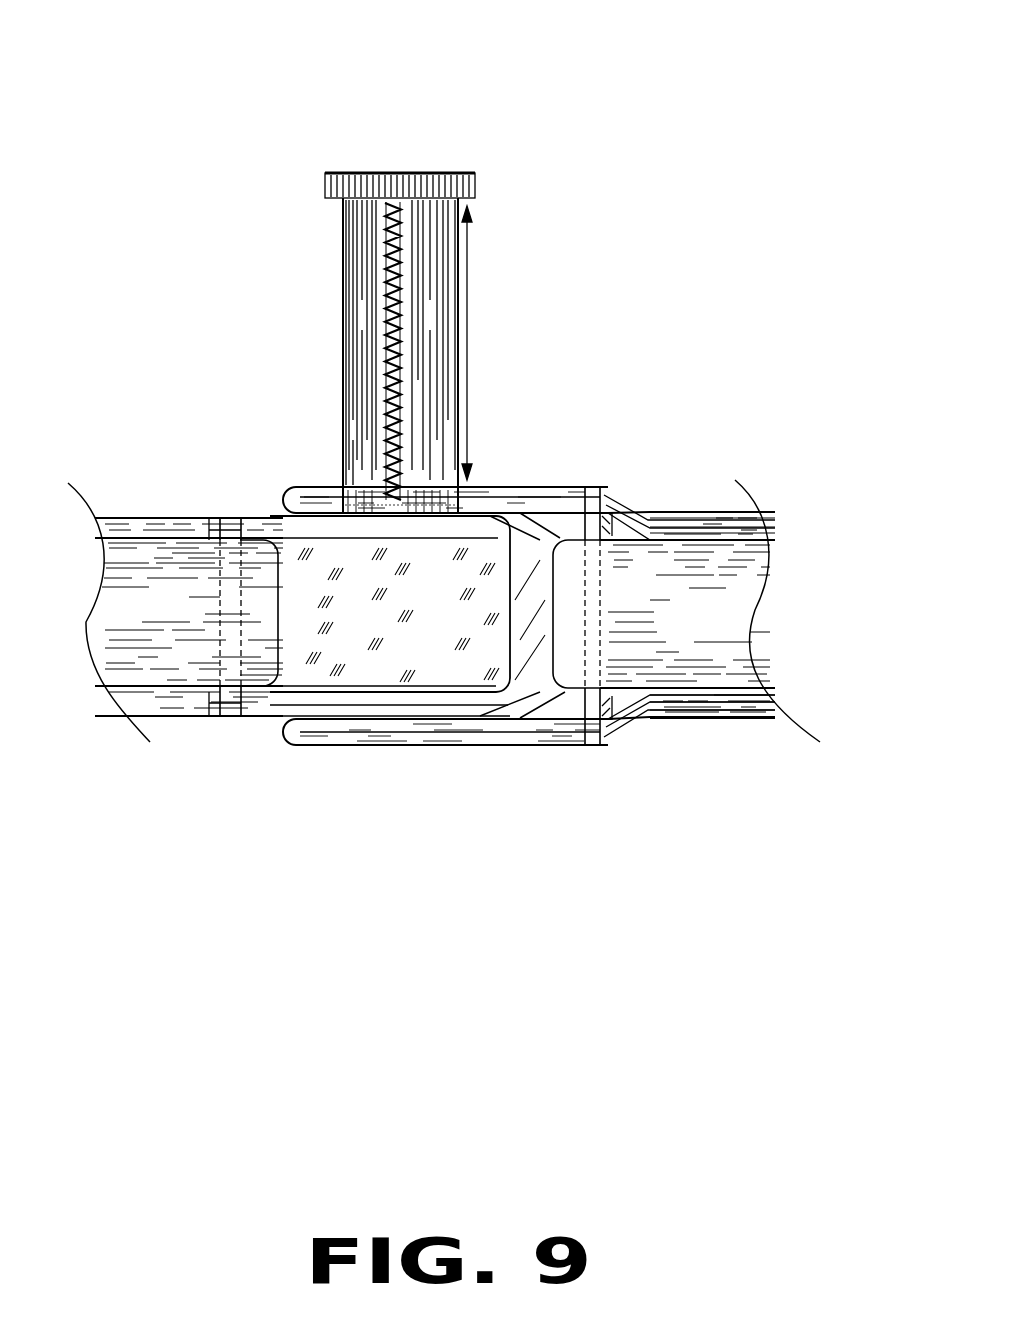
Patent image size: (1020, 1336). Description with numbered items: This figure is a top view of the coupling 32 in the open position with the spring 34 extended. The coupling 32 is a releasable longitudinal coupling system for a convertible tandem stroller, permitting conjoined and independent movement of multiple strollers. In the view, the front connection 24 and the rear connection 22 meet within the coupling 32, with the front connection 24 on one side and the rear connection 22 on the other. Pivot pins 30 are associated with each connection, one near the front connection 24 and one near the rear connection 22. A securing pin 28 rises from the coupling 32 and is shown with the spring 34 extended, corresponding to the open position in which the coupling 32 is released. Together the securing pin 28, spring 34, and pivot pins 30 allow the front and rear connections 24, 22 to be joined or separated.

The rear connection 22 is at (652, 597).
The front connection 24 is at (290, 535).
The securing pin 28 is at (397, 173).
The pivot pins 30 is at (228, 605).
The coupling 32 is at (553, 268).
The spring 34 is at (393, 302).